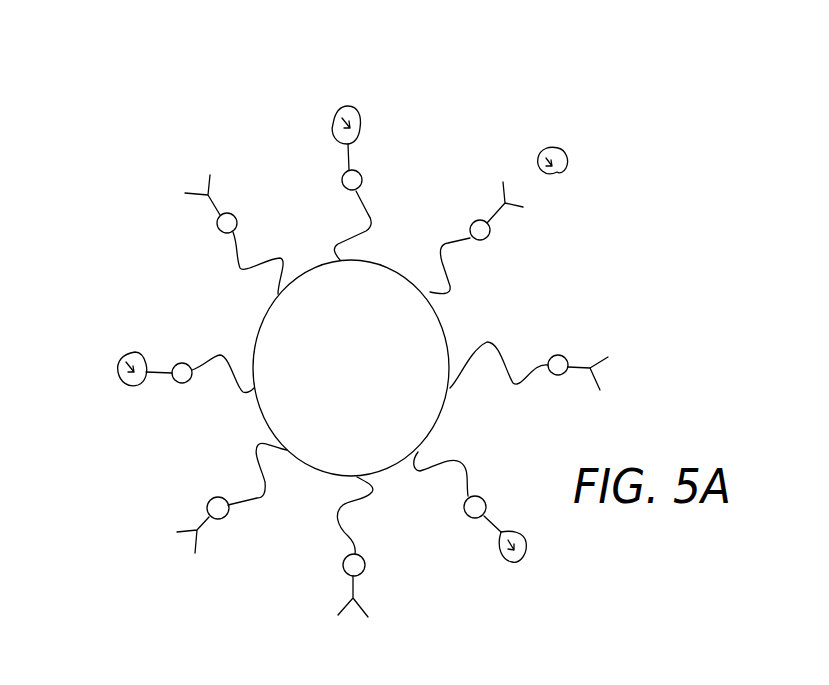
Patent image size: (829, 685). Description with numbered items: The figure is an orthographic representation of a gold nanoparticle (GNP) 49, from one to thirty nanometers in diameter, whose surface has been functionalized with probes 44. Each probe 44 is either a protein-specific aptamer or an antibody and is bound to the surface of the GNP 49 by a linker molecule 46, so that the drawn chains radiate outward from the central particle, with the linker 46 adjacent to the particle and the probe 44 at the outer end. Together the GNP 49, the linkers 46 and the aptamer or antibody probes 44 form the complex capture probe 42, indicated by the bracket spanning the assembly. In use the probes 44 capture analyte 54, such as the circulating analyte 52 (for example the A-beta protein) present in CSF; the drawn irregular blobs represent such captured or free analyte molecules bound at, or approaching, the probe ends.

The complex capture probe 42 is at (152, 96).
The probes 44 is at (216, 224).
The linker molecule 46 is at (256, 467).
The gold nanoparticle 49 is at (448, 335).
The circulating analyte 52 is at (557, 172).
The analyte 54 is at (135, 352).